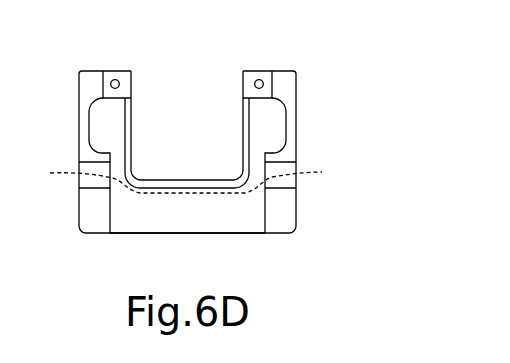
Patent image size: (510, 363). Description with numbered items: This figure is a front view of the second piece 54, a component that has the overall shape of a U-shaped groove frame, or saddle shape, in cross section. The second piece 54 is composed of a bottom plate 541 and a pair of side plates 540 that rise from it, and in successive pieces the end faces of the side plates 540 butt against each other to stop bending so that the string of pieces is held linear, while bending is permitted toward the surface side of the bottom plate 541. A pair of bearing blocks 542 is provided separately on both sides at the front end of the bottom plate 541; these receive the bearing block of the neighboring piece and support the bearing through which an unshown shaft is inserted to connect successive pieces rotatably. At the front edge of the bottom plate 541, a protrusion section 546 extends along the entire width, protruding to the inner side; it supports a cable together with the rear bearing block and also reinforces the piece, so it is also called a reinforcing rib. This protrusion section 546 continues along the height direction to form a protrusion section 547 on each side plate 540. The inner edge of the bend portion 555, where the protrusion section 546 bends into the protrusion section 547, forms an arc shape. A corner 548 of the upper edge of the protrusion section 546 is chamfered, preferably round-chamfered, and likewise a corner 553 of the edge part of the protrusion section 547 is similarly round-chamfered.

The second piece 54 is at (303, 60).
The side plates 540 is at (78, 120).
The bottom plate 541 is at (143, 234).
The bearing blocks 542 is at (83, 217).
The protrusion section 546 is at (170, 197).
The protrusion section 547 is at (118, 115).
The corner 548 is at (202, 180).
The corner 553 is at (132, 121).
The bend portion 555 is at (184, 181).